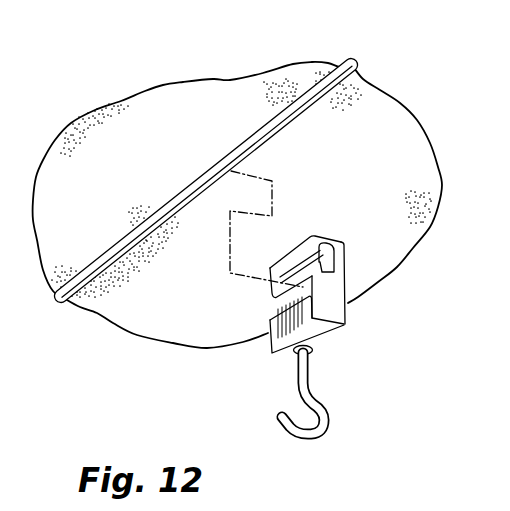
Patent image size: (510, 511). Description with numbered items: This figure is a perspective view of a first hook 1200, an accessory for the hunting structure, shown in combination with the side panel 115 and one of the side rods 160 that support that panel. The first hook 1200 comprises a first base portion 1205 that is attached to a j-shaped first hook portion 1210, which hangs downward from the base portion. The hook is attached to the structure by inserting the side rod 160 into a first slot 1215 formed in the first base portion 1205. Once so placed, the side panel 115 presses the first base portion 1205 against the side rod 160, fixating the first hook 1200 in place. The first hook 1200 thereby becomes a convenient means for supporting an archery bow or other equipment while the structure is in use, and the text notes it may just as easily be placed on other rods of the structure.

The side panel 115 is at (145, 168).
The side rod 160 is at (299, 128).
The first hook 1200 is at (337, 271).
The first base portion 1205 is at (319, 241).
The first slot 1215 is at (342, 241).
The first hook portion 1210 is at (329, 400).